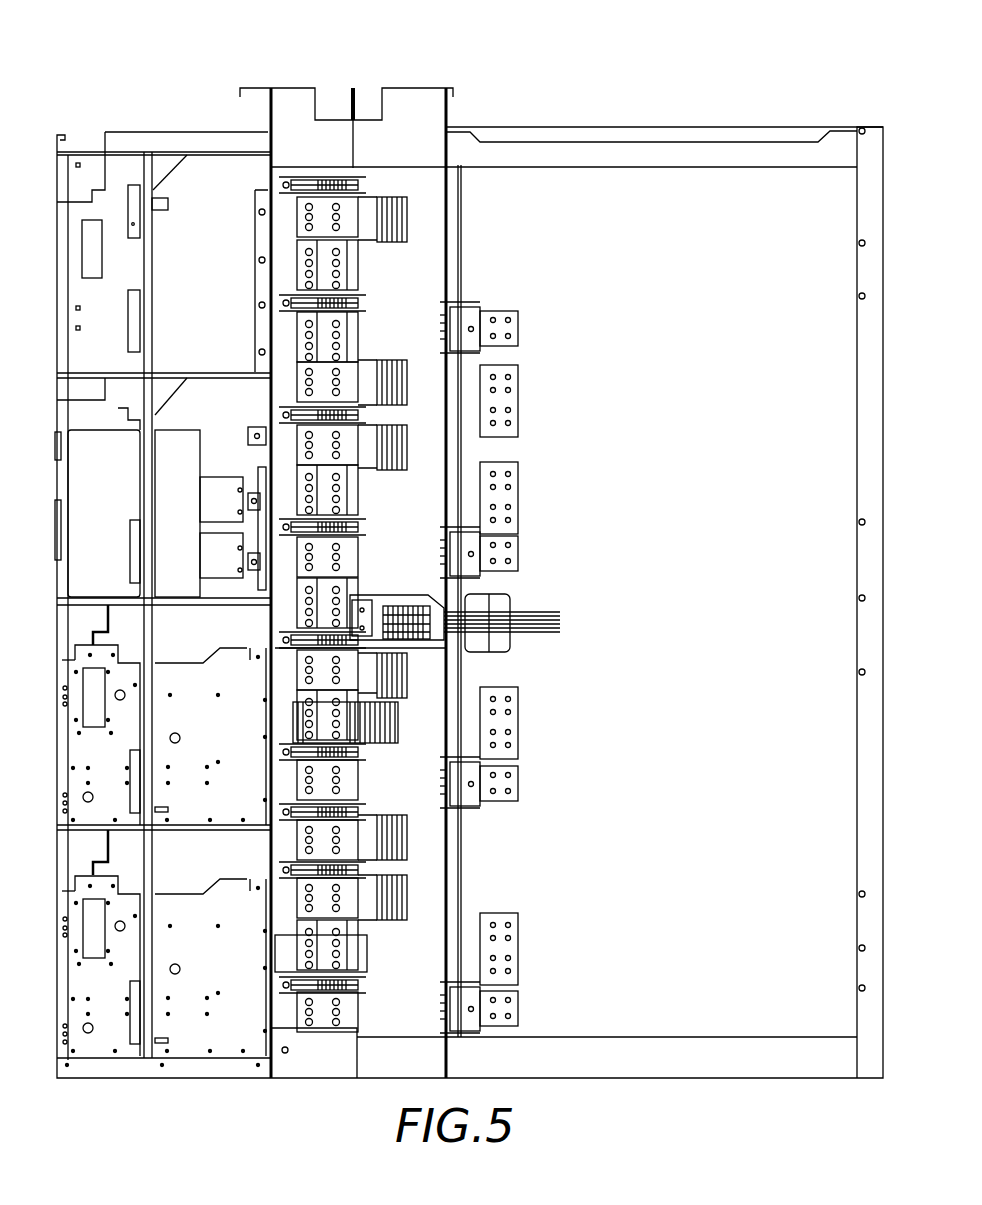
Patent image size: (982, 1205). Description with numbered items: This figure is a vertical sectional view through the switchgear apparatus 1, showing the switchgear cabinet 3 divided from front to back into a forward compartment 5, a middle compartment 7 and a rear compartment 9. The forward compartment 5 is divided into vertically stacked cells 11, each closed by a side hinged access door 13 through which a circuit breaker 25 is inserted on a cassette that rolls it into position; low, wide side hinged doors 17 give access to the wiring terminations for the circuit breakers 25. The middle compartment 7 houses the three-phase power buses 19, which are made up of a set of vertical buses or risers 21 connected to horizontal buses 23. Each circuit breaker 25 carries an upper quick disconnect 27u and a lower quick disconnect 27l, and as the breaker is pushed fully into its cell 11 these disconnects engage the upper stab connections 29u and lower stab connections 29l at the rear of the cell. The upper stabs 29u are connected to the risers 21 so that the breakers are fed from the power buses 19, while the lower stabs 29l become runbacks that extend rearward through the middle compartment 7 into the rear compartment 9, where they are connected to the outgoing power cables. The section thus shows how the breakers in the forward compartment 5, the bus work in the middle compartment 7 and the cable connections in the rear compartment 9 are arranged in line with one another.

The switchgear apparatus 1 is at (582, 80).
The switchgear cabinet 3 is at (446, 70).
The forward compartment 5 is at (205, 140).
The middle compartment 7 is at (418, 178).
The rear compartment 9 is at (672, 180).
The cells 11 is at (75, 380).
The access door 13 is at (63, 540).
The side hinged doors 17 is at (63, 408).
The power buses 19 is at (438, 233).
The vertical buses or risers 21 is at (342, 263).
The horizontal buses 23 is at (438, 392).
The circuit breakers 25 is at (175, 478).
The upper quick disconnect 27u is at (222, 485).
The lower quick disconnect 27l is at (218, 568).
The upper stab connections 29u is at (292, 492).
The lower stab connections 29l is at (345, 557).